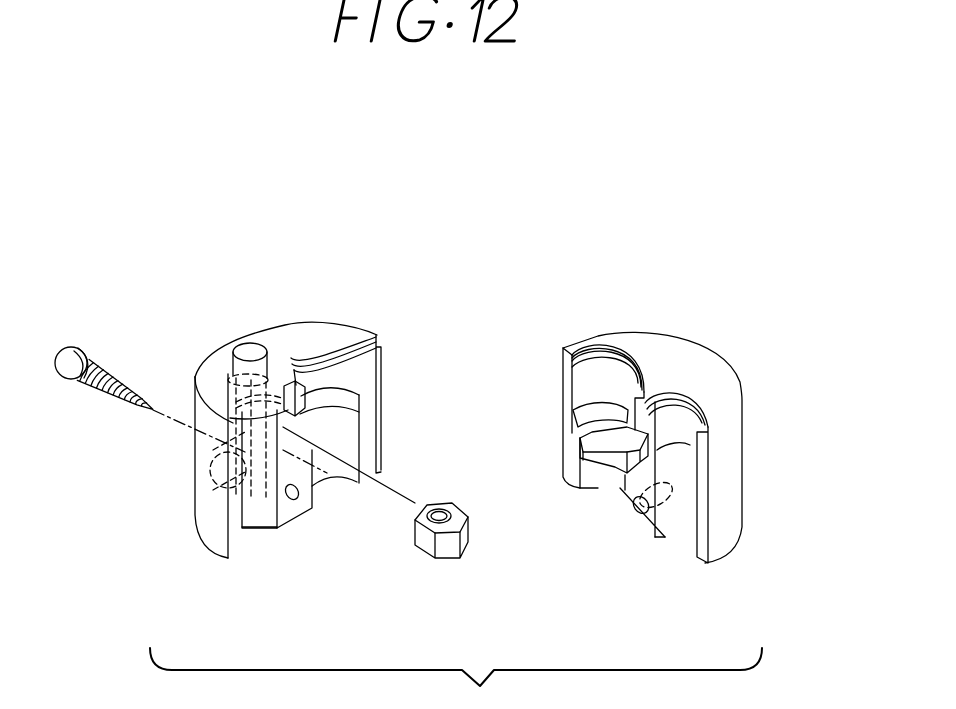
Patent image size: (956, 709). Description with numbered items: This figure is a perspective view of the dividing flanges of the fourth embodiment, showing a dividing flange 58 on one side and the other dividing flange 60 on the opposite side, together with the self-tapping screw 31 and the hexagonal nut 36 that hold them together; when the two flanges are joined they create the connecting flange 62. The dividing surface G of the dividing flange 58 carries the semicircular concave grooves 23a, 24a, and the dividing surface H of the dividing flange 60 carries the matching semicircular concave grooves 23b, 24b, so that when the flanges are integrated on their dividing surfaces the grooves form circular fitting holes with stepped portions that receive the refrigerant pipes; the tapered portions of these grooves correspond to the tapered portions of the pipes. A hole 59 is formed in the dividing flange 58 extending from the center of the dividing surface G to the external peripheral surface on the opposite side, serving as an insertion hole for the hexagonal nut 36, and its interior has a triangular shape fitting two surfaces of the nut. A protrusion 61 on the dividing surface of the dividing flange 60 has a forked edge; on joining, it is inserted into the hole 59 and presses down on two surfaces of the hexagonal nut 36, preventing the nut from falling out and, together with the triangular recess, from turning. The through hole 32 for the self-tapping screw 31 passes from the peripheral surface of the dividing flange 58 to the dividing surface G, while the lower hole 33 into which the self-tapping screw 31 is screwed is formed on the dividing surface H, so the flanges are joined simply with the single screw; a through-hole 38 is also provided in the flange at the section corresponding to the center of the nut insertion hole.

The self-tapping screw 31 is at (75, 345).
The hole 59 is at (212, 396).
The through-hole 38 is at (240, 341).
The dividing flange 58 is at (302, 330).
The semicircular concave groove 24b is at (598, 370).
The dividing flange 60 is at (684, 338).
The connecting flange 62 is at (687, 432).
The dividing surface G is at (374, 453).
The semicircular concave groove 24a is at (334, 472).
The semicircular concave groove 23a is at (260, 528).
The through hole 32 is at (283, 513).
The hexagonal nut 36 is at (444, 560).
The protrusion 61 is at (602, 465).
The lower hole 33 is at (640, 508).
The dividing surface H is at (647, 518).
The semicircular concave groove 23b is at (670, 526).